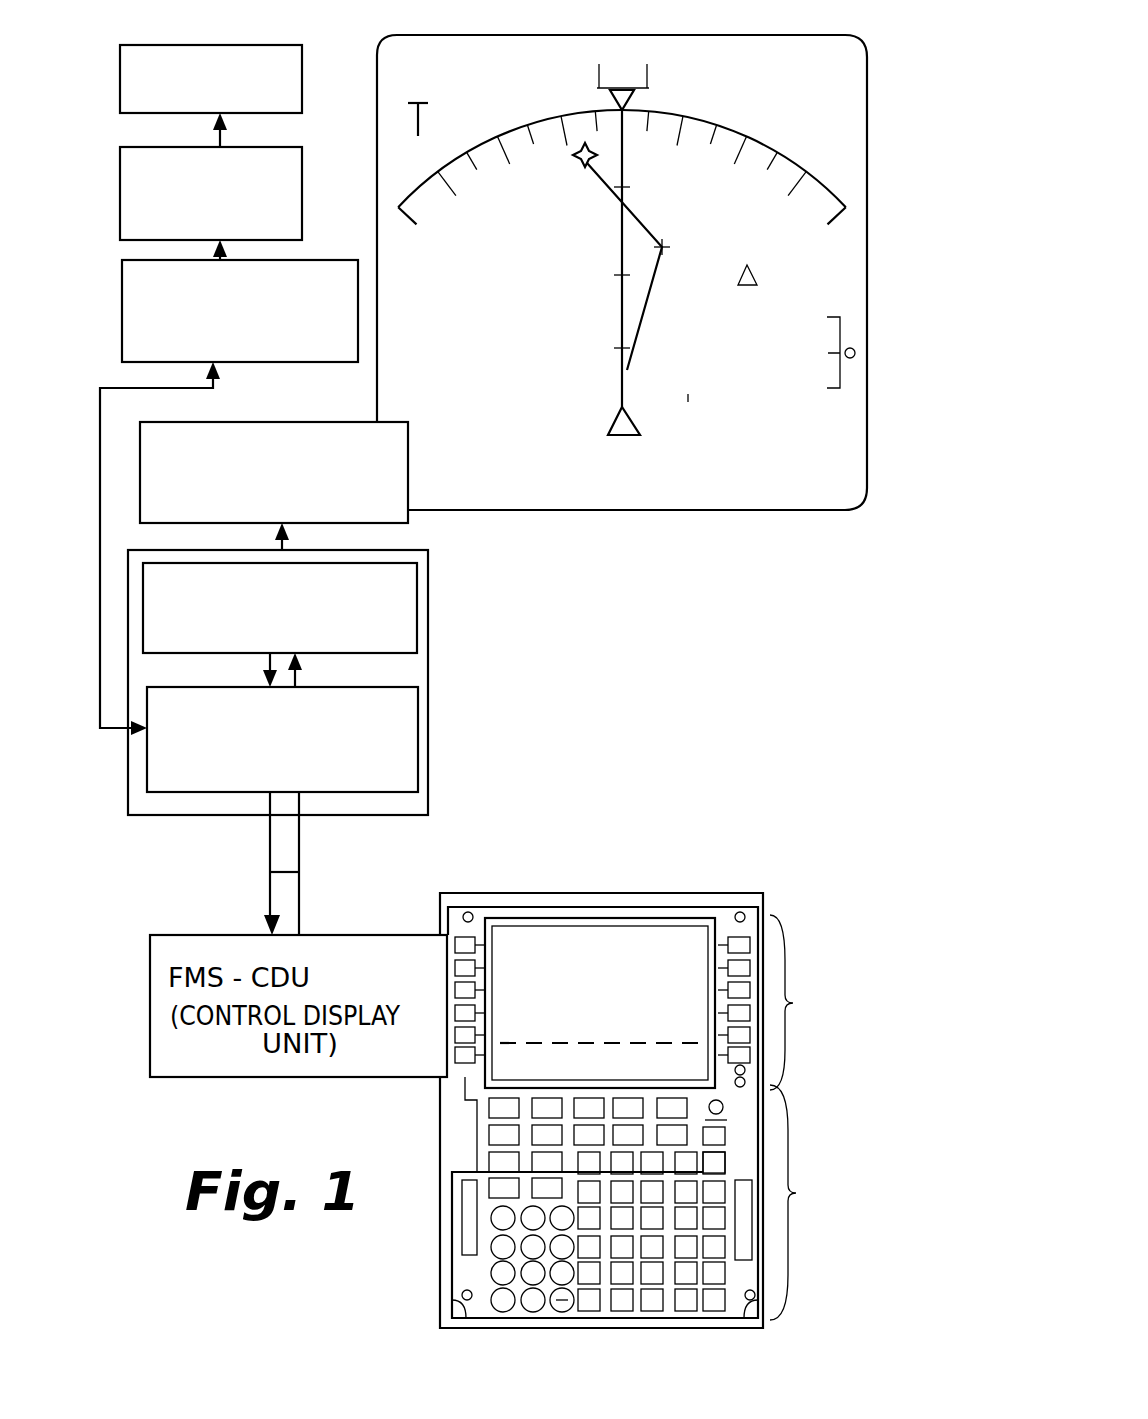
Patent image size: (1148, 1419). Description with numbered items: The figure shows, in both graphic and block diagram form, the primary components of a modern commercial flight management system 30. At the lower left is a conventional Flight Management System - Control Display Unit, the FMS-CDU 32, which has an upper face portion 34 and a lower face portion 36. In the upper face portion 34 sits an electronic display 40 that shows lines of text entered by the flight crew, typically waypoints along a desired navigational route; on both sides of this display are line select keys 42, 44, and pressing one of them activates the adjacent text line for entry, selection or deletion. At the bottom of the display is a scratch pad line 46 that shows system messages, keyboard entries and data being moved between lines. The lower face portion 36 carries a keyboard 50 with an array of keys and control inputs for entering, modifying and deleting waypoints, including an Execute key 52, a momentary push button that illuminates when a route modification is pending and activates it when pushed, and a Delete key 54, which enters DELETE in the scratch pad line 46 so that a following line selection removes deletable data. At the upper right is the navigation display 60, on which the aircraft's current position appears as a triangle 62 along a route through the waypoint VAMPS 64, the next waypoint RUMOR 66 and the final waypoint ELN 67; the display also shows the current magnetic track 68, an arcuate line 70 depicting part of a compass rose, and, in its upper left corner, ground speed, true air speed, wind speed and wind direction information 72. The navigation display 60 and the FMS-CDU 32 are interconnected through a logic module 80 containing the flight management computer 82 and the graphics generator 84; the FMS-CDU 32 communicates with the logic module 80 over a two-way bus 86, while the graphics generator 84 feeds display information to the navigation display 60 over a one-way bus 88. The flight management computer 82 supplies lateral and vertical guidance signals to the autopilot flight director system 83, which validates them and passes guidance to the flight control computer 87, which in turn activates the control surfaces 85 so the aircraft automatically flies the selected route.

The flight management system 30 is at (668, 737).
The flight management system control display unit (FMS-CDU) 32 is at (435, 913).
The upper face portion 34 is at (658, 969).
The lower face portion 36 is at (611, 1216).
The electronic display 40 is at (695, 1013).
The line select keys 42 is at (727, 930).
The line select keys 44 is at (452, 922).
The scratch pad line 46 is at (702, 1073).
The keyboard 50 is at (575, 1202).
The Execute key 52 is at (722, 1138).
The Delete key 54 is at (657, 1313).
The navigation display (MAP) 60 is at (312, 433).
The triangle 62 is at (640, 425).
The waypoint VAMPS 64 is at (627, 372).
The waypoint RUMOR 66 is at (677, 240).
The waypoint ELN 67 is at (523, 197).
The current magnetic track 68 is at (633, 50).
The arcuate line 70 is at (377, 128).
The ground speed, true air speed, wind speed and wind direction information 72 is at (376, 50).
The logic module 80 is at (330, 739).
The flight management computer (FMC) 82 is at (405, 776).
The autopilot flight director system (AFDS) 83 is at (328, 266).
The graphics generator (display module) 84 is at (417, 633).
The control surfaces 85 is at (302, 76).
The two-way bus 86 is at (300, 872).
The flight control computer (FCC) 87 is at (377, 185).
The one-way bus 88 is at (286, 537).